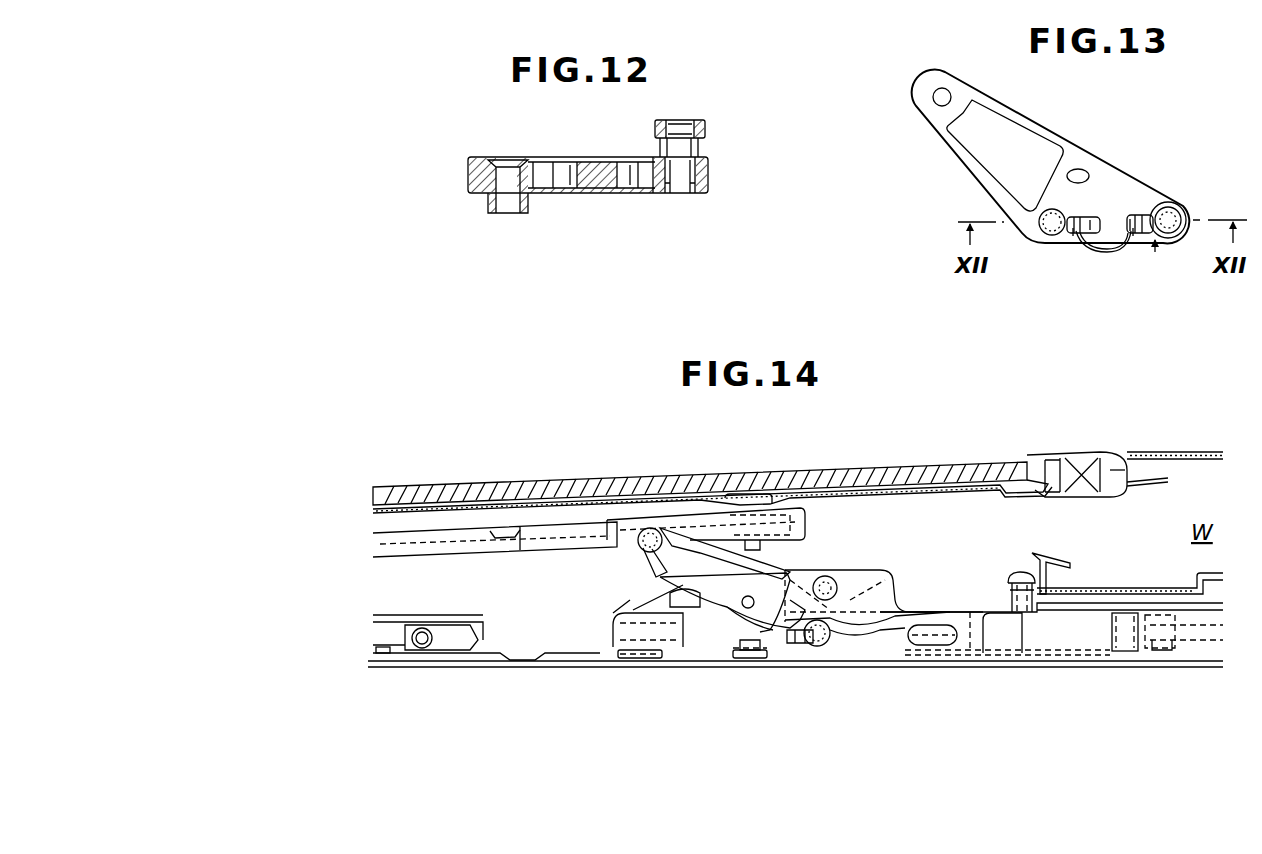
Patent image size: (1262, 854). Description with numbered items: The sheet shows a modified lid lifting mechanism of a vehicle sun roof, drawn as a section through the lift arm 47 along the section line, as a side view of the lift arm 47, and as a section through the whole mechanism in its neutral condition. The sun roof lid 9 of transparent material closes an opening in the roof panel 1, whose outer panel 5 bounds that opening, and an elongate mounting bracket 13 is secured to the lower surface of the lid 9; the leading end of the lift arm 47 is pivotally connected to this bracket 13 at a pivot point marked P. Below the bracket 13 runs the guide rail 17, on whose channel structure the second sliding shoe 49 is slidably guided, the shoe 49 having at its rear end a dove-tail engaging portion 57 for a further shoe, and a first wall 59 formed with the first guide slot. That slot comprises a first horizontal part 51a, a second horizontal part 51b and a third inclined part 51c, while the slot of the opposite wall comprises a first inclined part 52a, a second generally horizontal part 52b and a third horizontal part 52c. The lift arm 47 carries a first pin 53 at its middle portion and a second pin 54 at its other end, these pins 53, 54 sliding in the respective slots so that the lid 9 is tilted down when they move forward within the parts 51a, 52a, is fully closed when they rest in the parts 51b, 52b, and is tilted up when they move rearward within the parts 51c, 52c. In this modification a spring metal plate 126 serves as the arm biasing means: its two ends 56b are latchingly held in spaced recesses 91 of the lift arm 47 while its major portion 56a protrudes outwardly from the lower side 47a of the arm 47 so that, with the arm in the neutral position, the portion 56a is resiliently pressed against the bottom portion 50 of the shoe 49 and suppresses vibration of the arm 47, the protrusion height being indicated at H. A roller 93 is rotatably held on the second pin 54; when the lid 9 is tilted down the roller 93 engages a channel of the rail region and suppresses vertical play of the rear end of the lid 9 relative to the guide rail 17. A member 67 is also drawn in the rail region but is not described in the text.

In FIG. 14, the roof panel 1 is at (1168, 452).
In FIG. 14, the outer panel 5 is at (1203, 454).
In FIG. 14, the sun roof lid 9 is at (857, 462).
In FIG. 14, the mounting bracket 13 is at (492, 546).
In FIG. 14, the guide rail 17 is at (995, 672).
In FIG. 12, the lift arm 47 is at (596, 194).
In FIG. 13, the lift arm 47 is at (1040, 131).
In FIG. 13, the lower side of the lift arm 47a is at (1146, 241).
In FIG. 14, the second sliding shoe 49 is at (952, 604).
In FIG. 14, the bottom portion of the second sliding shoe 50 is at (747, 655).
In FIG. 14, the first horizontal part 51a is at (635, 645).
In FIG. 14, the second horizontal part 51b is at (785, 620).
In FIG. 14, the third inclined part 51c is at (887, 581).
In FIG. 14, the first inclined part 52a is at (700, 609).
In FIG. 14, the second generally horizontal part 52b is at (775, 640).
In FIG. 14, the third horizontal part 52c is at (930, 645).
In FIG. 12, the first pin 53 is at (500, 189).
In FIG. 13, the first pin 53 is at (1047, 235).
In FIG. 14, the first pin 53 is at (730, 632).
In FIG. 12, the second pin 54 is at (685, 182).
In FIG. 13, the second pin 54 is at (1173, 233).
In FIG. 14, the second pin 54 is at (850, 660).
In FIG. 13, the major portion of the spring metal plate 56a is at (1097, 252).
In FIG. 13, the ends of the spring metal plate 56b is at (1090, 220).
In FIG. 14, the engaging portion 57 is at (1010, 641).
In FIG. 14, the first wall 59 is at (896, 619).
In FIG. 14, the stop member 67 is at (1118, 650).
In FIG. 13, the recesses 91 is at (1082, 220).
In FIG. 12, the roller 93 is at (655, 129).
In FIG. 13, the spring metal plate 126 is at (1112, 255).
In FIG. 14, the spring metal plate 126 is at (790, 655).
In FIG. 13, the height H is at (1158, 248).
In FIG. 14, the pivot point P is at (633, 551).